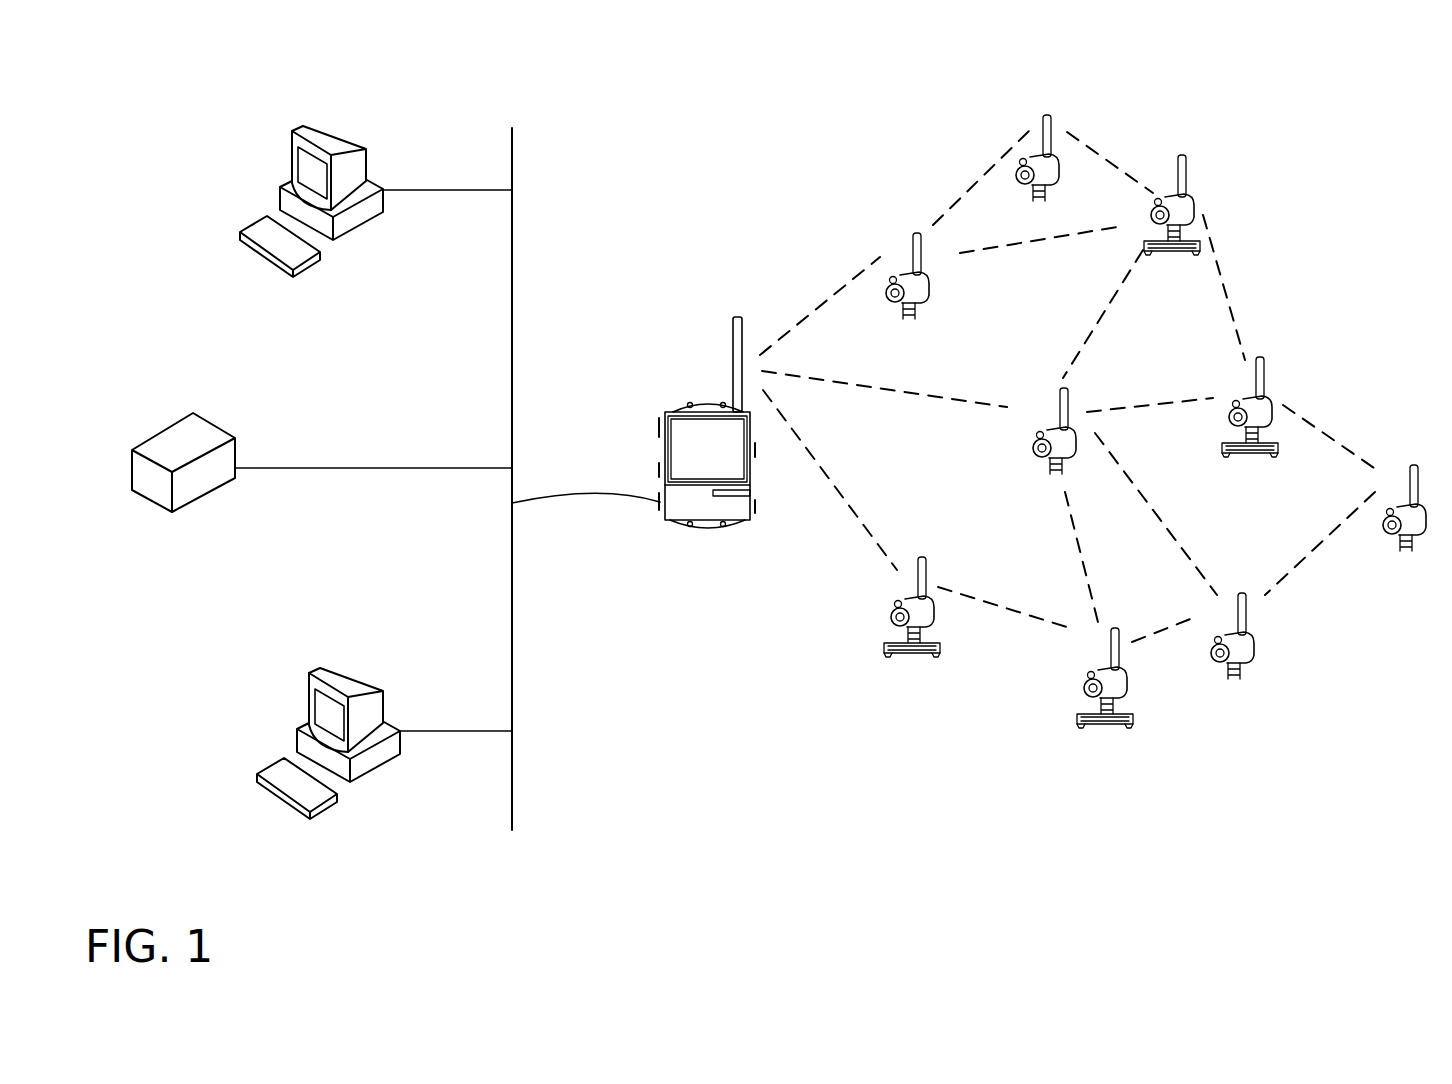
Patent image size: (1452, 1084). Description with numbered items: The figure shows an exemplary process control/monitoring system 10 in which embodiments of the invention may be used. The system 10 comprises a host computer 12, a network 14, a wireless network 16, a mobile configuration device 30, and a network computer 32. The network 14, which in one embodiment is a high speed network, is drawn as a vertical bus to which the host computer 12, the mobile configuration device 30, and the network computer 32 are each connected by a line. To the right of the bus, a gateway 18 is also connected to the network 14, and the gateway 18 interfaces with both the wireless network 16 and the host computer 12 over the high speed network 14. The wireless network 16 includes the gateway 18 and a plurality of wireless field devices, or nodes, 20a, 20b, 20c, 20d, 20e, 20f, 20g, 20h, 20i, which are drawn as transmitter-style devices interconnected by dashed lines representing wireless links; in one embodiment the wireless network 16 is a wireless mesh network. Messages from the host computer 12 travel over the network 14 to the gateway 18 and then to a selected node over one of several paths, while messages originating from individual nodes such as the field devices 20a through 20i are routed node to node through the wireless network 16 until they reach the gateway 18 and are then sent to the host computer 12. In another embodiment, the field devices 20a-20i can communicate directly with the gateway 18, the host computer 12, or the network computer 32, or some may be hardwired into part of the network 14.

The process control/monitoring system 10 is at (758, 93).
The host computer 12 is at (343, 238).
The network 14 is at (511, 168).
The wireless network 16 is at (653, 499).
The gateway 18 is at (660, 428).
The wireless field device 20a is at (923, 290).
The wireless field device 20b is at (1033, 445).
The wireless field device 20c is at (925, 620).
The wireless field device 20d is at (1055, 177).
The wireless field device 20e is at (1120, 692).
The wireless field device 20f is at (1182, 260).
The wireless field device 20g is at (1227, 440).
The wireless field device 20h is at (1247, 633).
The wireless field device 20i is at (1418, 513).
The mobile configuration device 30 is at (193, 413).
The network computer 32 is at (295, 708).